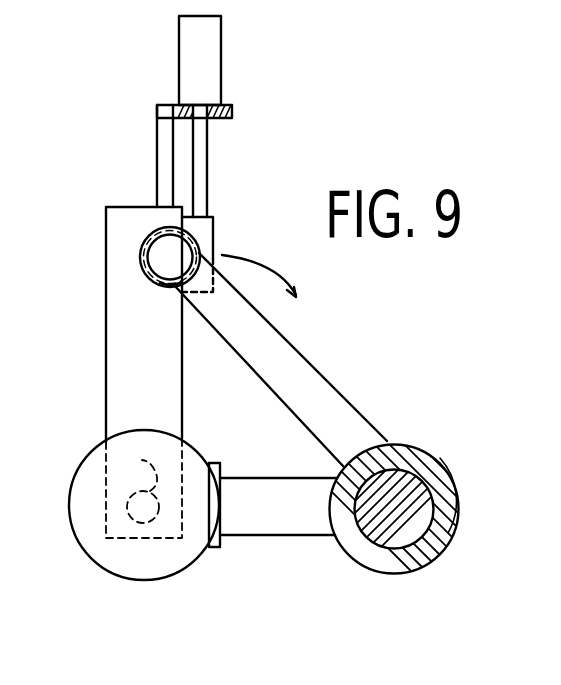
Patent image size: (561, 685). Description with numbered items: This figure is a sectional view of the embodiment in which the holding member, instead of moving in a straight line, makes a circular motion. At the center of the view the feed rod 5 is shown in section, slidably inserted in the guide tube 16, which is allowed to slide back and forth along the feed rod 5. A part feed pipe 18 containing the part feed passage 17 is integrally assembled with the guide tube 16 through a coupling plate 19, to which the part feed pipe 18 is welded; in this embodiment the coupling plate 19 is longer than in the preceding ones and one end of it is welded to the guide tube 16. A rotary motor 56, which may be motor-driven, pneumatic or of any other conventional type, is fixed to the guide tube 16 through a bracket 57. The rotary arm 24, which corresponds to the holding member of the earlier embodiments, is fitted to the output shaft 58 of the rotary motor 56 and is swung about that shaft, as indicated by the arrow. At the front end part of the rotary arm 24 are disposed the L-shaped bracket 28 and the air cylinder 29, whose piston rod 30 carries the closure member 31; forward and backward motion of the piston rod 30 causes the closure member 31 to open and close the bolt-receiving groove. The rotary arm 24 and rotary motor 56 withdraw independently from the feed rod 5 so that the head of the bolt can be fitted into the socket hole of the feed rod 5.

The feed rod 5 is at (428, 528).
The guide tube 16 is at (440, 465).
The part feed passage 17 is at (160, 257).
The part feed pipe 18 is at (170, 285).
The coupling plate 19 is at (305, 355).
The rotary arm 24 is at (106, 328).
The L-shaped bracket 28 is at (157, 140).
The air cylinder 29 is at (221, 53).
The piston rod 30 is at (207, 147).
The closure member 31 is at (213, 228).
The rotary motor 56 is at (70, 498).
The bracket 57 is at (262, 535).
The output shaft 58 is at (144, 488).